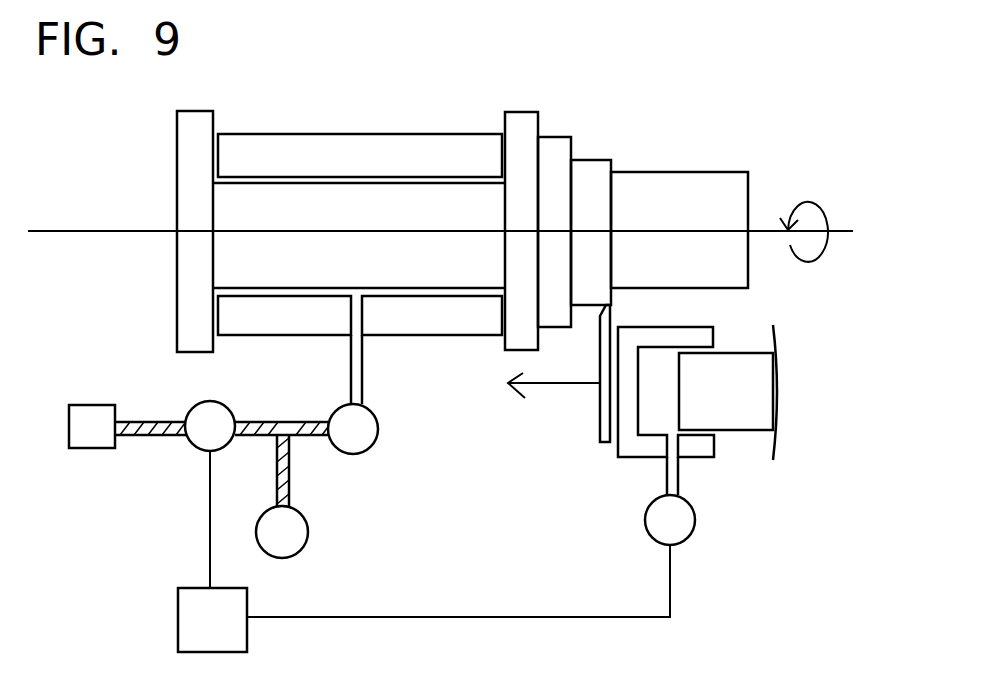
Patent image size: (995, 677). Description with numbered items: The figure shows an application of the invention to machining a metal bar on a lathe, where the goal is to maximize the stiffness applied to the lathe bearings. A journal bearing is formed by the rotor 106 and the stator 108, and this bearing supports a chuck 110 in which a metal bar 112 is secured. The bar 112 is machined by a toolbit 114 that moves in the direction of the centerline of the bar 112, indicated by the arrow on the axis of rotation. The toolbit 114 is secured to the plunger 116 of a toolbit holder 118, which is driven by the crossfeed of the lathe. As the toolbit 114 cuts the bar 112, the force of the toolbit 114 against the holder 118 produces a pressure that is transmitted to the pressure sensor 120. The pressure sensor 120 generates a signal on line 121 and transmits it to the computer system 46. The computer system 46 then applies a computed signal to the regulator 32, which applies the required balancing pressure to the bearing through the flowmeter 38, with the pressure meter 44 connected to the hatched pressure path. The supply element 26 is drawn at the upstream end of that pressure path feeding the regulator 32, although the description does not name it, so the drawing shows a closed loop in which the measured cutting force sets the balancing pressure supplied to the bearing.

The pressure source 26 is at (92, 426).
The regulator 32 is at (210, 426).
The flowmeter 38 is at (353, 429).
The pressure meter 44 is at (282, 532).
The computer system 46 is at (212, 551).
The rotor 106 is at (515, 112).
The stator 108 is at (302, 134).
The chuck 110 is at (557, 137).
The metal bar 112 is at (590, 160).
The toolbit 114 is at (598, 332).
The plunger 116 is at (713, 340).
The toolbit holder 118 is at (747, 413).
The pressure sensor 120 is at (670, 520).
The line 121 is at (622, 620).